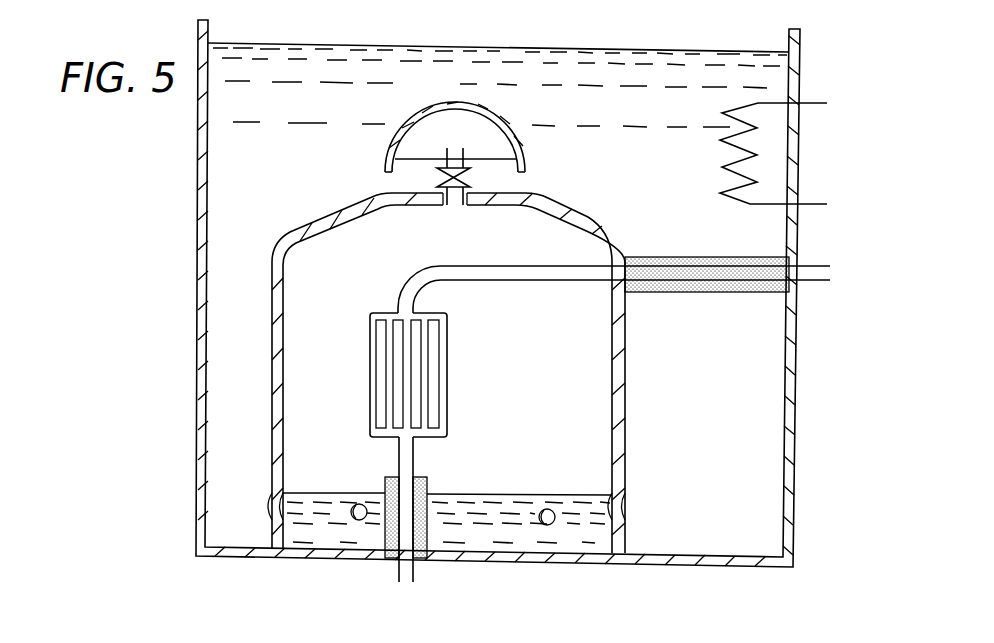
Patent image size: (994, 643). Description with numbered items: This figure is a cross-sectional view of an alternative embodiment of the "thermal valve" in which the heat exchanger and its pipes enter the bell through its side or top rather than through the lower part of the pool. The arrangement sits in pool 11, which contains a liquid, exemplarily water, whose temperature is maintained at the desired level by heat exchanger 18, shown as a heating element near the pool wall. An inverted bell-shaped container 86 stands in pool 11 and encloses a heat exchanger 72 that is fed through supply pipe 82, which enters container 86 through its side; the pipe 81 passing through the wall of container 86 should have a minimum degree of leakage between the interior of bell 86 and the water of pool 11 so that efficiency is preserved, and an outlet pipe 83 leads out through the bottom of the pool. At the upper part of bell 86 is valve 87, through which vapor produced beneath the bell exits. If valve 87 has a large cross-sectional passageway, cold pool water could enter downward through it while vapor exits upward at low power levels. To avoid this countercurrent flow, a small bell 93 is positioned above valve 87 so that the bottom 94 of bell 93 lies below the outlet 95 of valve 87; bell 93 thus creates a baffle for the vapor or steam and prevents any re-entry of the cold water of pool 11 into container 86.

The pool 11 is at (197, 462).
The heat exchanger 18 is at (722, 140).
The heat exchanger 72 is at (368, 346).
The pipe 81 is at (622, 278).
The supply pipe 82 is at (808, 278).
The outlet pipe 83 is at (410, 462).
The container 86 is at (625, 448).
The valve 87 is at (471, 184).
The small bell 93 is at (508, 128).
The bottom of bell 94 is at (386, 158).
The outlet of valve 95 is at (455, 150).